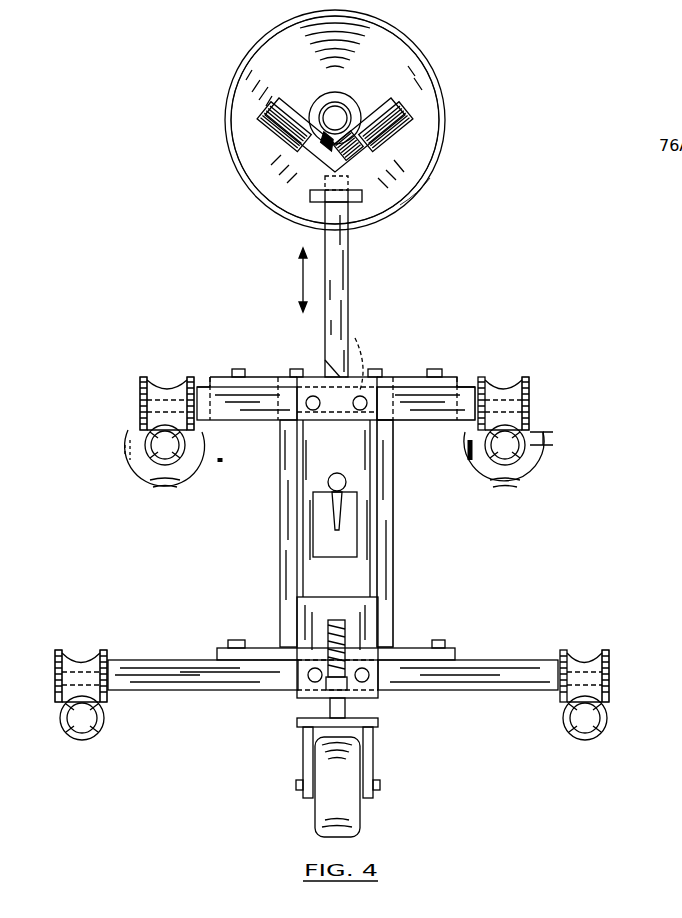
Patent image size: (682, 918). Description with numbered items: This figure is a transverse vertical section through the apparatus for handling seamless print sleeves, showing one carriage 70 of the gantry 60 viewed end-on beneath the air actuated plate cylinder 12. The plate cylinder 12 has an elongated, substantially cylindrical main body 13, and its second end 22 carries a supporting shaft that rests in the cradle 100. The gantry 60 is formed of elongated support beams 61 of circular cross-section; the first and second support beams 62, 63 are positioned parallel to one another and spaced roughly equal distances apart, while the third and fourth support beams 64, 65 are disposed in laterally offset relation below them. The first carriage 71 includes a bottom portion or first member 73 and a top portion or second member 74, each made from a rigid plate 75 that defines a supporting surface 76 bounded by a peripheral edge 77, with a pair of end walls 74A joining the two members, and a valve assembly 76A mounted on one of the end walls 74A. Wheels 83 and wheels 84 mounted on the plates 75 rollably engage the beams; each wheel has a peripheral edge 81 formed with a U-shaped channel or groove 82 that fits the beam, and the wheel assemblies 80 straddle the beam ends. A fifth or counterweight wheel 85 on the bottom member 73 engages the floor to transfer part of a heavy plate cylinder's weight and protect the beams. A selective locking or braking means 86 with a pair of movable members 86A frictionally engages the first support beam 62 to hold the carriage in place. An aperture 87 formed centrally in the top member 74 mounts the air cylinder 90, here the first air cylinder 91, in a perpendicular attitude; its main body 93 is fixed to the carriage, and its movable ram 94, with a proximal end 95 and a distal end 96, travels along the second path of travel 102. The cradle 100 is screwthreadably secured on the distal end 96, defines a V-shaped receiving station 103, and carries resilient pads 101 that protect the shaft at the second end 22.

The air actuated plate cylinder 12 is at (422, 30).
The main body 13 is at (444, 90).
The second end 22 is at (430, 178).
The gantry 60 is at (545, 460).
The support beams 61 is at (180, 478).
The first support beam 62 is at (500, 460).
The second support beam 63 is at (155, 460).
The third support beam 64 is at (588, 738).
The fourth support beam 65 is at (60, 720).
The carriage 70 is at (458, 298).
The first carriage 71 is at (198, 340).
The bottom portion or first member 73 is at (465, 680).
The top portion or second member 74 is at (400, 405).
The end walls 74A is at (320, 570).
The rigid plate 75 is at (266, 400).
The supporting surface 76 is at (470, 387).
The valve assembly 76A is at (322, 537).
The peripheral edge 77 is at (198, 390).
The roller assembly 80 is at (132, 378).
The peripheral edge 81 is at (189, 385).
The U-shaped channel or groove 82 is at (166, 385).
The wheels 83 is at (138, 395).
The wheels 84 is at (55, 660).
The counterweight wheel 85 is at (303, 810).
The selective locking or braking means 86 is at (165, 470).
The movable members 86A is at (546, 456).
The aperture 87 is at (343, 372).
The air cylinder 90 is at (400, 543).
The first air cylinder 91 is at (393, 578).
The main body 93 is at (323, 505).
The movable ram 94 is at (348, 285).
The proximal end 95 is at (338, 370).
The distal end 96 is at (352, 210).
The cradle 100 is at (400, 138).
The pads 101 is at (318, 118).
The second path of travel 102 is at (298, 283).
The V-shaped receiving station 103 is at (290, 112).